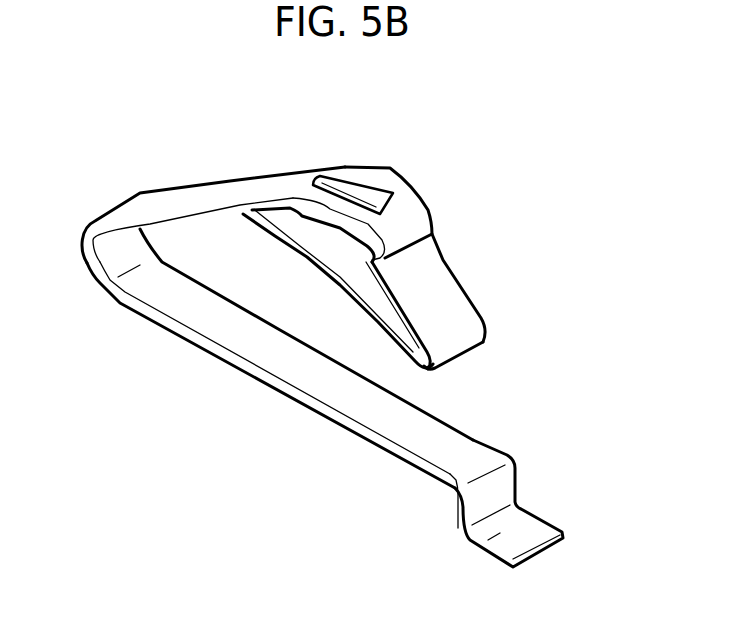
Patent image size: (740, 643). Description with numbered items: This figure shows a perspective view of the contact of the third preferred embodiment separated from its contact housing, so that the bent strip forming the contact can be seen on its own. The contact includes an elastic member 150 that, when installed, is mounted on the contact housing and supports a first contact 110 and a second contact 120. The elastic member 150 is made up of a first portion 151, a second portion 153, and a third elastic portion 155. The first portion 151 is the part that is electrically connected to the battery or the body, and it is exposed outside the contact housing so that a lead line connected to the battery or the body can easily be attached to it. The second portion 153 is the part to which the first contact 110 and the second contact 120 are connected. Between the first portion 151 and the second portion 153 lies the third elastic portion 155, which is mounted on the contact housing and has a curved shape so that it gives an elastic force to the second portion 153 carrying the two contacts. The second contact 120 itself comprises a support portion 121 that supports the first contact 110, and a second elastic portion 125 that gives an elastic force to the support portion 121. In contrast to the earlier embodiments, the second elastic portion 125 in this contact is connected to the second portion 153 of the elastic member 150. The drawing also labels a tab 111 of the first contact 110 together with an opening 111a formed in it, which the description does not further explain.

The first contact 110 is at (283, 173).
The tab 111 is at (412, 223).
The hole 111a is at (370, 192).
The second contact 120 is at (510, 319).
The support portion 121 is at (450, 298).
The second elastic portion 125 is at (503, 373).
The elastic member 150 is at (290, 389).
The first portion 151 is at (440, 503).
The second portion 153 is at (190, 212).
The third elastic portion 155 is at (88, 253).